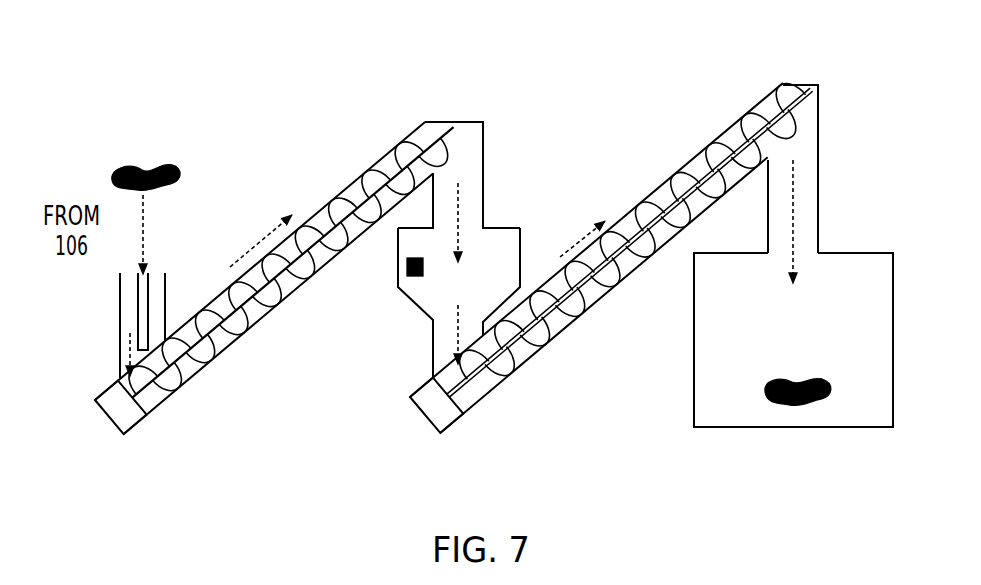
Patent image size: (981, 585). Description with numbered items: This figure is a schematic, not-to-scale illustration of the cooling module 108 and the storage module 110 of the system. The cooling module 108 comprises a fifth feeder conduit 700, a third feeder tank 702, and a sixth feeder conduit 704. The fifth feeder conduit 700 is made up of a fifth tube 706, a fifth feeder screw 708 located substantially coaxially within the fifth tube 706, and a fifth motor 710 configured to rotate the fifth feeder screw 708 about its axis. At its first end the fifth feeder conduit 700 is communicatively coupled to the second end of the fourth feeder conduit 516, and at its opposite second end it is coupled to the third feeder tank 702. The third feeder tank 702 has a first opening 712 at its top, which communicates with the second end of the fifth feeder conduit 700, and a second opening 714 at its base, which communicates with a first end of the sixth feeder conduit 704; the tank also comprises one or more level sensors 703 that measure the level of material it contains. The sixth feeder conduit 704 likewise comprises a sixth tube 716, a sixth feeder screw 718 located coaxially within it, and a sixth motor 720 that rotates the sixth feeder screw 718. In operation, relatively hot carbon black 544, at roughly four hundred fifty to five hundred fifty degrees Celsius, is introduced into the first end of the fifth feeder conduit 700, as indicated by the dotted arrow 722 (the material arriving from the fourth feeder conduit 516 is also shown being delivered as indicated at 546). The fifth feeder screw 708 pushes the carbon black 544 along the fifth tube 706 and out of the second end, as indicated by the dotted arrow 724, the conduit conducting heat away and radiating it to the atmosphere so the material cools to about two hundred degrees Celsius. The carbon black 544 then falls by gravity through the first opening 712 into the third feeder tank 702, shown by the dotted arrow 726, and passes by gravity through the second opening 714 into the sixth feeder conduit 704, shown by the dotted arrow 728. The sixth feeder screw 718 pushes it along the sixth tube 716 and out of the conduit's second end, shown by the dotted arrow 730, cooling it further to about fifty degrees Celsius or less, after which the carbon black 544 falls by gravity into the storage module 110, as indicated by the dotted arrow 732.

The cooling module 108 is at (620, 97).
The storage module 110 is at (890, 253).
The fourth feeder conduit 516 is at (110, 313).
The carbon black 544 is at (177, 172).
The material flow into hopper 546 is at (145, 217).
The fifth feeder conduit 700 is at (281, 288).
The third feeder tank 702 is at (467, 255).
The level sensors 703 is at (424, 268).
The sixth feeder conduit 704 is at (618, 273).
The fifth tube 706 is at (292, 262).
The fifth feeder screw 708 is at (328, 194).
The fifth motor 710 is at (121, 407).
The first opening 712 is at (468, 228).
The second opening 714 is at (433, 372).
The sixth tube 716 is at (630, 242).
The sixth feeder screw 718 is at (652, 190).
The sixth motor 720 is at (436, 405).
The introduction of carbon black into fifth feeder conduit 722 is at (126, 350).
The movement of carbon black along fifth feeder conduit 724 is at (277, 227).
The fall of carbon black into third feeder tank 726 is at (457, 238).
The introduction of carbon black into sixth feeder conduit 728 is at (455, 332).
The movement of carbon black along sixth feeder conduit 730 is at (582, 240).
The fall of carbon black into storage module 732 is at (793, 193).